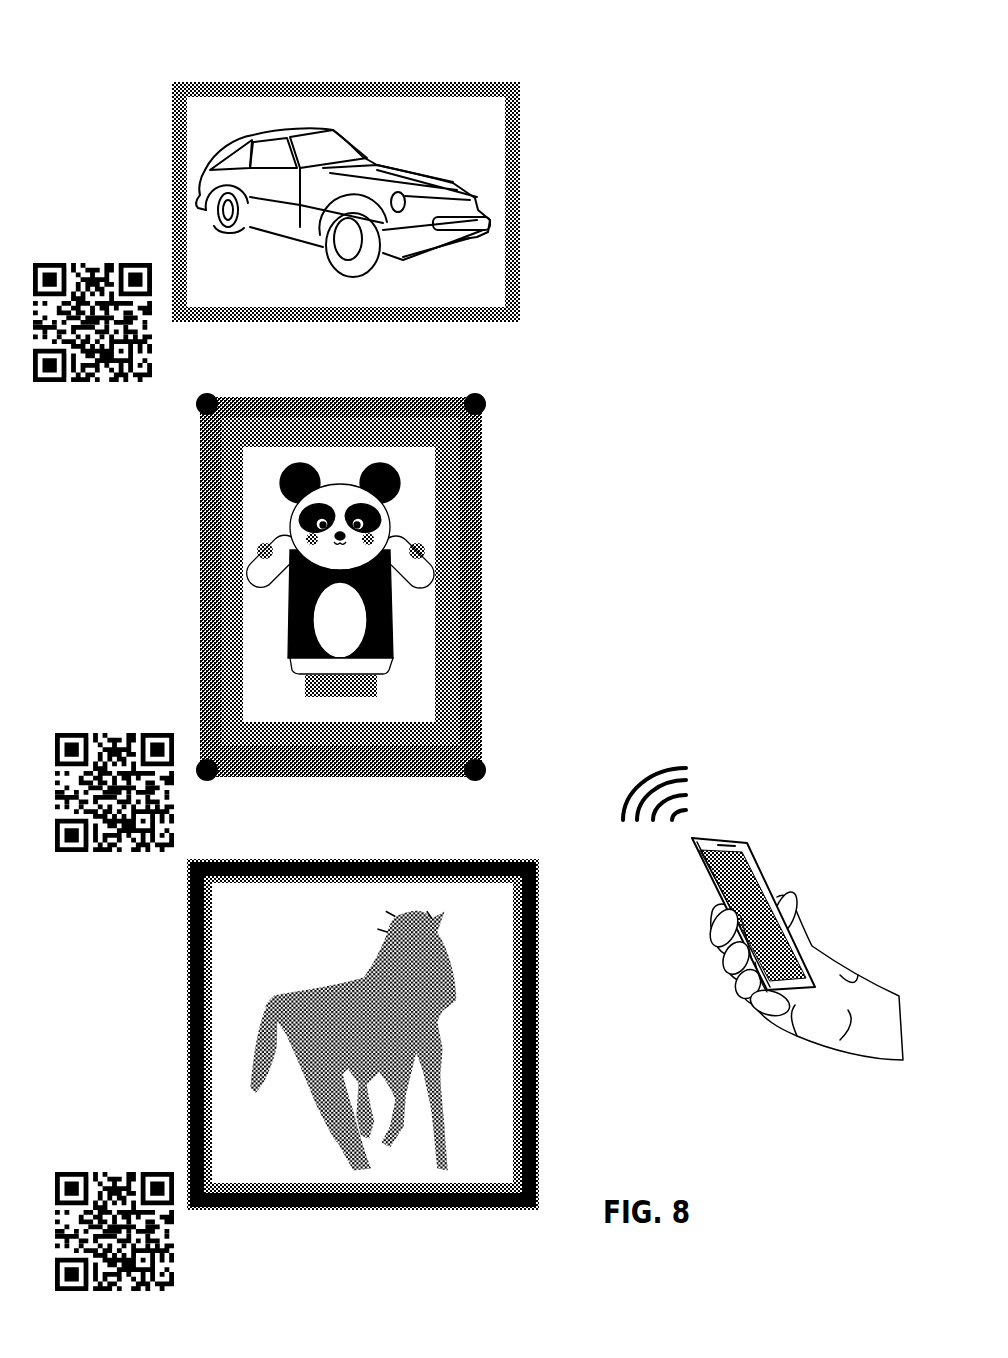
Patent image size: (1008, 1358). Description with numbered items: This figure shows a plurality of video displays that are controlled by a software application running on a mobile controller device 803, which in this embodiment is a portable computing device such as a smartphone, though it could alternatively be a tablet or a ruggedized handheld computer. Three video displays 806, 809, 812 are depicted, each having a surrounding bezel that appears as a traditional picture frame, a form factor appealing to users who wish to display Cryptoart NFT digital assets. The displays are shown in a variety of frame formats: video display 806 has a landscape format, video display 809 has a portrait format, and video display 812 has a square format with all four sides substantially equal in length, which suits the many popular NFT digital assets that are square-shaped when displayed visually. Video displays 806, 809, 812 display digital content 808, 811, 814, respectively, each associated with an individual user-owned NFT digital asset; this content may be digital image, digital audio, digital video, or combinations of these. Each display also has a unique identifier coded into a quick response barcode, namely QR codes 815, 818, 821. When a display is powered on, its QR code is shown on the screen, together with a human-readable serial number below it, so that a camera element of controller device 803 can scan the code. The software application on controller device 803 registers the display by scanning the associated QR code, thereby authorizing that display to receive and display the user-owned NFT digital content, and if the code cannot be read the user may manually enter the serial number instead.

The controller device 803 is at (771, 840).
The video display 806 is at (530, 198).
The digital content 808 is at (418, 122).
The video display 809 is at (493, 526).
The digital content 811 is at (415, 467).
The video display 812 is at (554, 958).
The digital content 814 is at (474, 899).
The quick response (QR) barcode 815 is at (71, 252).
The quick response (QR) barcode 818 is at (93, 722).
The quick response (QR) barcode 821 is at (93, 1160).